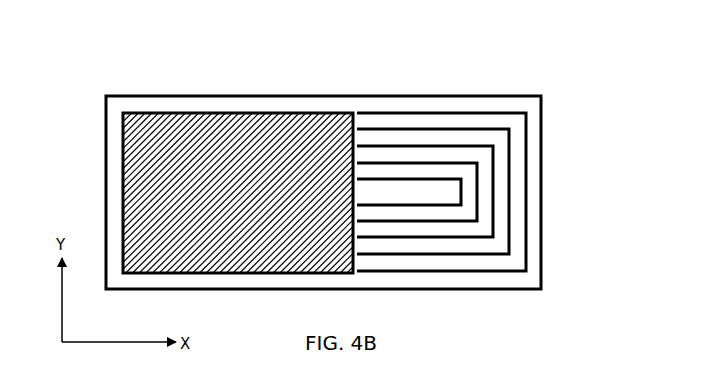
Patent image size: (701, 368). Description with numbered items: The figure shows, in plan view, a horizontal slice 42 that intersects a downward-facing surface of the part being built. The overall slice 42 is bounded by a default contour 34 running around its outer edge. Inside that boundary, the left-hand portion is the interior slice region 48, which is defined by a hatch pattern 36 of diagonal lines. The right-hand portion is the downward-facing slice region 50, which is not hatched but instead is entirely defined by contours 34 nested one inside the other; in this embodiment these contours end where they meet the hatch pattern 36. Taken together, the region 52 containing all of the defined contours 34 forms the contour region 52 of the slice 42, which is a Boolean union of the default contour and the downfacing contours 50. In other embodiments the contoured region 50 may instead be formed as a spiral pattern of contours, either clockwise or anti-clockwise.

The default contour 34 is at (128, 103).
The hatch pattern 36 is at (257, 160).
The interior slice region 48 is at (227, 112).
The slice 42 is at (480, 58).
The downward-facing slice region 50 is at (501, 222).
The contour region 52 is at (493, 264).